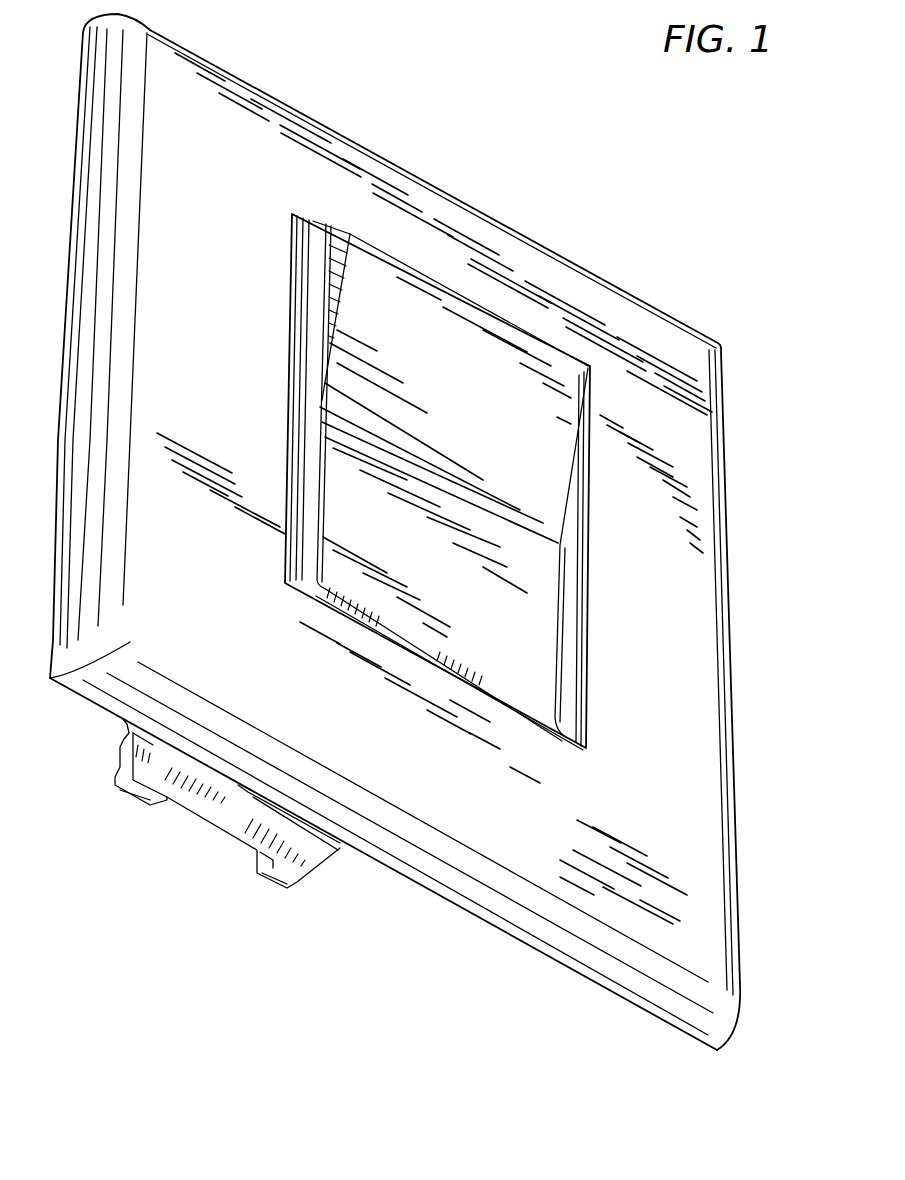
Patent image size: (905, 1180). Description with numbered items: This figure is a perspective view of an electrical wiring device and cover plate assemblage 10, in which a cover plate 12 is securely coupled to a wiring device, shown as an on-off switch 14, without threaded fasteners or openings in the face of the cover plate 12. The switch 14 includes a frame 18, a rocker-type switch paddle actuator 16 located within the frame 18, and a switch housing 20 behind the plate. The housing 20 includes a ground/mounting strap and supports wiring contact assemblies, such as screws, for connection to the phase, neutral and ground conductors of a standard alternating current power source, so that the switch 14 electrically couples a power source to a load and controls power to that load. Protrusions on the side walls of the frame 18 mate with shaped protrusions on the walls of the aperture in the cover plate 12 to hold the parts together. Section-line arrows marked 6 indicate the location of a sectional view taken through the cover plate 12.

The mounting plate assembly 10 is at (401, 532).
The plate body 12 is at (704, 587).
The recessed pocket 14 is at (421, 482).
The inner panel 16 is at (340, 353).
The pocket side wall 18 is at (300, 473).
The mounting tab bracket 20 is at (120, 757).
The section line for FIG. 6 is at (63, 406).